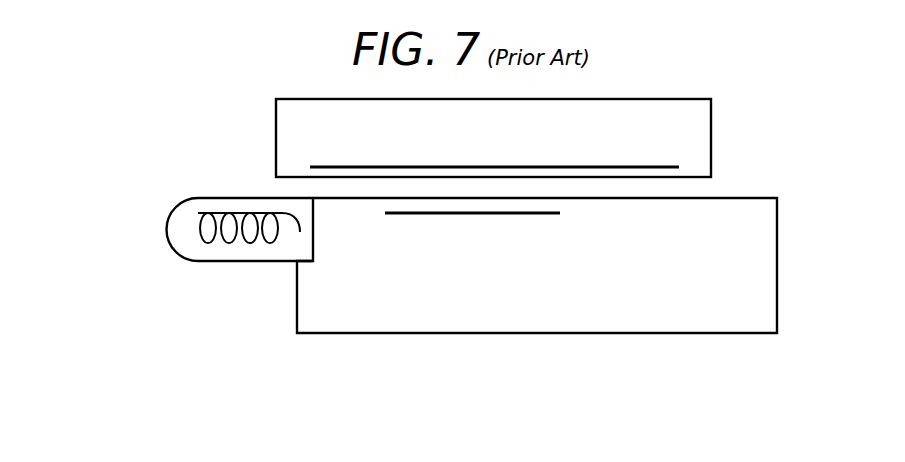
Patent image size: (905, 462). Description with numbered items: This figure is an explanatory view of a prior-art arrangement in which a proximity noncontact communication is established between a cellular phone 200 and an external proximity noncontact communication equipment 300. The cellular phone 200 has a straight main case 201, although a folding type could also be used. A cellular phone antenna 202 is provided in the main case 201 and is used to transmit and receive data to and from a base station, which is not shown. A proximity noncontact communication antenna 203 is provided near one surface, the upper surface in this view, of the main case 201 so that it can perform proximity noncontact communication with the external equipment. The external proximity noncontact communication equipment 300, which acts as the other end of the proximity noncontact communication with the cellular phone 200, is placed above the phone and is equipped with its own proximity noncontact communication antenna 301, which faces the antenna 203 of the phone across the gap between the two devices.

The cellular phone 200 is at (422, 315).
The main case 201 is at (358, 320).
The cellular phone antenna 202 is at (185, 225).
The proximity noncontact communication antenna 203 is at (471, 213).
The external proximity noncontact communication equipment 300 is at (297, 127).
The proximity noncontact communication antenna 301 is at (655, 167).